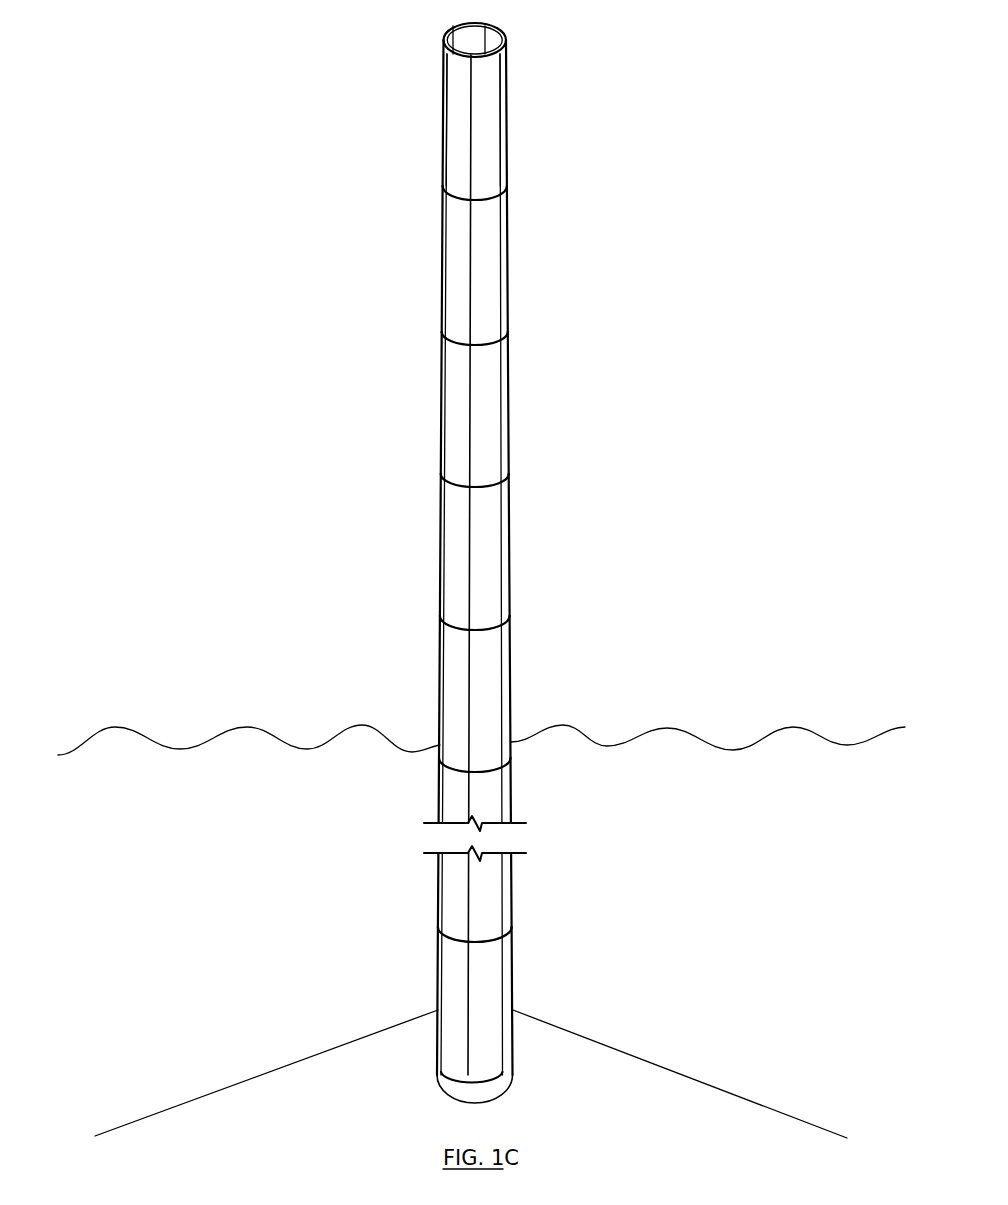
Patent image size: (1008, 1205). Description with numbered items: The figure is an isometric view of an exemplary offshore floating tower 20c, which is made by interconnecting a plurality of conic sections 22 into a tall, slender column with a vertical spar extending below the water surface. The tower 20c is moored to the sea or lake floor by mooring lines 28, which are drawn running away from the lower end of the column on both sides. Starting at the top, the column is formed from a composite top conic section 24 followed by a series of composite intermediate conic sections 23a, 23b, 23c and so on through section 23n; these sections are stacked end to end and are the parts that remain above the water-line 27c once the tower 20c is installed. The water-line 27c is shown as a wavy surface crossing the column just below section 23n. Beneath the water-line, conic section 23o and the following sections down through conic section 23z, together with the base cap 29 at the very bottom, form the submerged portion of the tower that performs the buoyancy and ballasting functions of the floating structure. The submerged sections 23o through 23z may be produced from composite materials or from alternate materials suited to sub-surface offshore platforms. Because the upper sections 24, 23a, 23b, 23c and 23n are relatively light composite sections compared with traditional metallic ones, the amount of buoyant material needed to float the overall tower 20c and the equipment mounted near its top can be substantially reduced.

The offshore floating tower 20c is at (463, 584).
The conic sections 22 is at (410, 120).
The composite top conic section 24 is at (480, 584).
The composite intermediate conic section 23a is at (541, 265).
The composite intermediate conic section 23b is at (541, 409).
The composite intermediate conic section 23c is at (540, 552).
The composite intermediate conic section 23n is at (498, 694).
The conic section 23o is at (498, 790).
The conic section 23z is at (500, 1004).
The water-line 27c is at (481, 721).
The mooring lines 28 is at (471, 1065).
The base cap 29 is at (509, 1110).